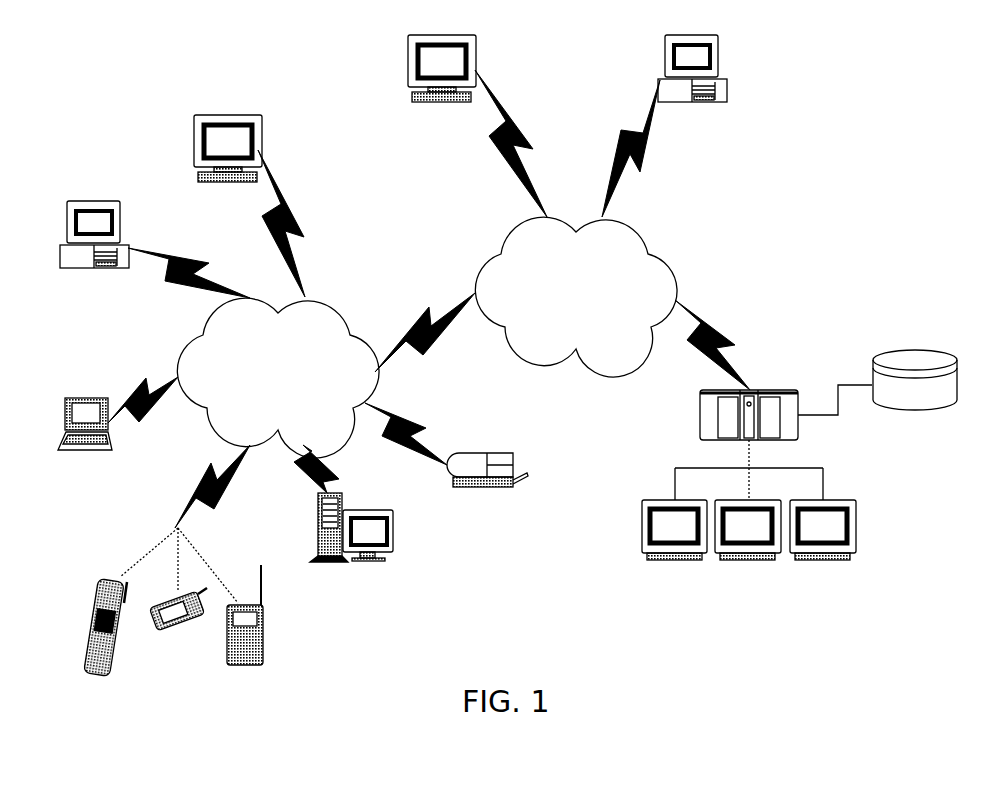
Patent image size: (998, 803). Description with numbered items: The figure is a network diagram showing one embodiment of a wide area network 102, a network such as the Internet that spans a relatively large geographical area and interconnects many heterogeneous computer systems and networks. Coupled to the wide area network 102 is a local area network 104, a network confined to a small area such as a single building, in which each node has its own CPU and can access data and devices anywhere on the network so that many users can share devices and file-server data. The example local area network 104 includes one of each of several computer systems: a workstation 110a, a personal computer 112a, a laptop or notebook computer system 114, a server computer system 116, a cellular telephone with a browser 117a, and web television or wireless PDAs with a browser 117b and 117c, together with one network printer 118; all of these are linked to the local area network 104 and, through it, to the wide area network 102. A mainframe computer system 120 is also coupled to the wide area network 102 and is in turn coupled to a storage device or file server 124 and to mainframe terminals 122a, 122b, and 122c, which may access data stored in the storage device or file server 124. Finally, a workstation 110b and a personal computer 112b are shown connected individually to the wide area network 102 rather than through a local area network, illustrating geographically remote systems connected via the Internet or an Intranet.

The wide area network 102 is at (576, 297).
The local area network 104 is at (278, 378).
The workstation 110a is at (245, 192).
The workstation 110b is at (452, 108).
The personal computer 112a is at (118, 274).
The personal computer 112b is at (690, 108).
The laptop or notebook computer system 114 is at (80, 455).
The server computer system 116 is at (352, 565).
The cellular telephone with a browser 117a is at (74, 631).
The web television or wireless PDA with a browser 117b is at (178, 628).
The web television or wireless PDA with a browser 117c is at (270, 617).
The network printer 118 is at (480, 495).
The mainframe computer system 120 is at (692, 406).
The mainframe terminal 122a is at (672, 565).
The mainframe terminal 122b is at (733, 565).
The mainframe terminal 122c is at (858, 530).
The storage device or file server 124 is at (905, 420).